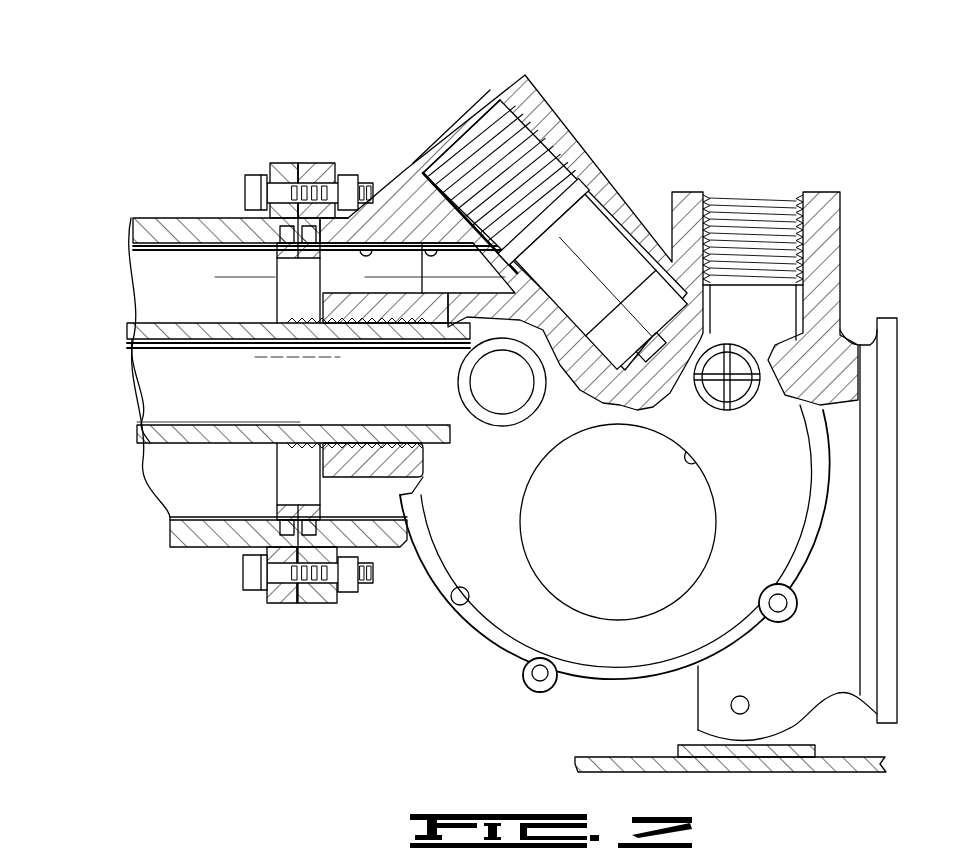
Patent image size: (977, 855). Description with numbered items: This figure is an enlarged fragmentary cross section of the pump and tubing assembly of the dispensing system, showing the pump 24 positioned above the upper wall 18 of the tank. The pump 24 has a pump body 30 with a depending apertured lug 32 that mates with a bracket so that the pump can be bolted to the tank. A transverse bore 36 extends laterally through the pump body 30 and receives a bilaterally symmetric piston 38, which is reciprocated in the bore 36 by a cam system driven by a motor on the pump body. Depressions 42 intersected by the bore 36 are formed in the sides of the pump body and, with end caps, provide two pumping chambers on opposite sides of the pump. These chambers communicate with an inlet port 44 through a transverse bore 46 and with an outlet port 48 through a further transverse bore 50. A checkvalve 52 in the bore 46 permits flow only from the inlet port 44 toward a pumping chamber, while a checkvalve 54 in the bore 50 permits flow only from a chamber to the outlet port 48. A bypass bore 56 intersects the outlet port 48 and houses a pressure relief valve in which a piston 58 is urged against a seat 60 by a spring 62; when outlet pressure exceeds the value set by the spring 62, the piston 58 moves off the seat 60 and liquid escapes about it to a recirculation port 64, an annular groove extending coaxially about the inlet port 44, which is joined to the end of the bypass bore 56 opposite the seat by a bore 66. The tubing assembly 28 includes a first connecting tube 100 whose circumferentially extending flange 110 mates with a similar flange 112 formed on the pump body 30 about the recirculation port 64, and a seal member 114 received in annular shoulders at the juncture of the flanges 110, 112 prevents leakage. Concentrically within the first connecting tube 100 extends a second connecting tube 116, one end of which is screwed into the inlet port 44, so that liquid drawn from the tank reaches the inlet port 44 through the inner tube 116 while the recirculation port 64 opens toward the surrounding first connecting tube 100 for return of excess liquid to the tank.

The upper wall 18 is at (857, 763).
The pump 24 is at (608, 135).
The tubing assembly 28 is at (204, 217).
The pump body 30 is at (888, 347).
The depending apertured lug 32 is at (705, 707).
The transverse bore 36 is at (693, 463).
The piston 38 is at (634, 536).
The depressions 42 is at (465, 588).
The inlet port 44 is at (400, 315).
The transverse bore 46 is at (497, 410).
The outlet port 48 is at (717, 205).
The transverse bore 50 is at (733, 350).
The checkvalve 52 is at (522, 418).
The checkvalve 54 is at (740, 378).
The bypass bore 56 is at (617, 218).
The piston 58 is at (552, 148).
The seat 60 is at (620, 273).
The spring 62 is at (547, 192).
The recirculation port 64 is at (384, 205).
The bore 66 is at (432, 240).
The first connecting tube 100 is at (162, 217).
The circumferentially extending flange 110 is at (277, 172).
The flange 112 is at (320, 163).
The seal member 114 is at (297, 255).
The second connecting tube 116 is at (162, 407).